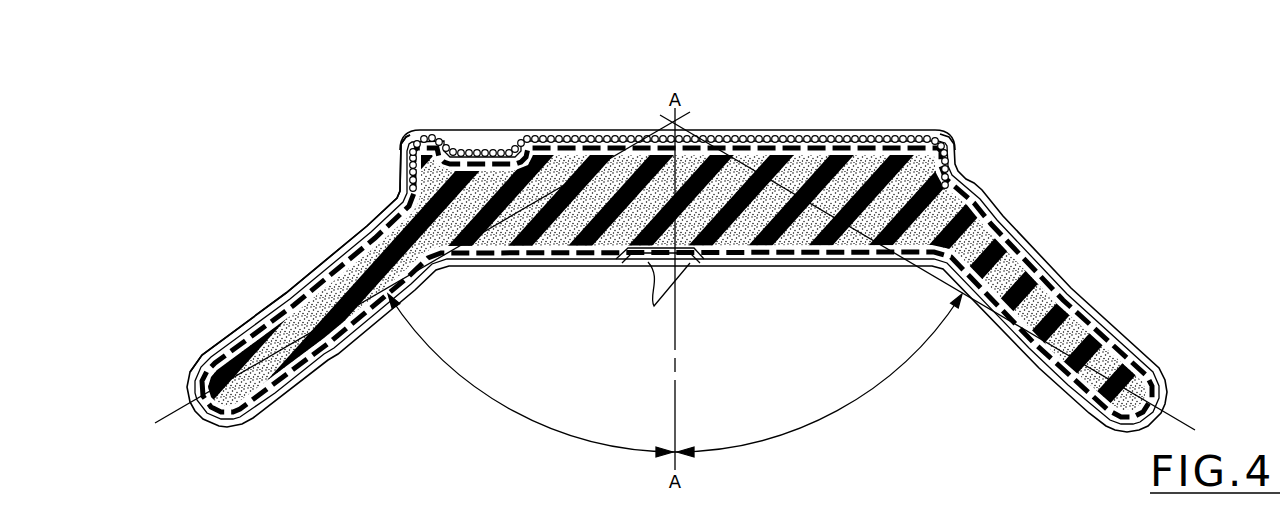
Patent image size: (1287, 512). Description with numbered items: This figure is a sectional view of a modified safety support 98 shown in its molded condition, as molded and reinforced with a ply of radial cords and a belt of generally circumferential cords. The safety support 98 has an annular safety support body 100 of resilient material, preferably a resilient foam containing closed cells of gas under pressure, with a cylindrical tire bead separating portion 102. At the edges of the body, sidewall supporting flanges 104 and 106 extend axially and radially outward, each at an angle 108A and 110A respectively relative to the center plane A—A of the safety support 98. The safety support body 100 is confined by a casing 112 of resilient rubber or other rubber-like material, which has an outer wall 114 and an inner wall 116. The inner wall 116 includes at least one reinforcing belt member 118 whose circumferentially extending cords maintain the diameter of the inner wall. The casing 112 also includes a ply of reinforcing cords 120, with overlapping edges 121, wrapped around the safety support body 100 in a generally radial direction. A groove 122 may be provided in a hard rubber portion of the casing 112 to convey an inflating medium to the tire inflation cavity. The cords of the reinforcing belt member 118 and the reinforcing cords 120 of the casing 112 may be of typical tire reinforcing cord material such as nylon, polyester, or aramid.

The safety support 98 is at (1015, 206).
The annular safety support body 100 is at (922, 165).
The cylindrical tire bead separating portion 102 is at (640, 263).
The sidewall supporting flange 104 is at (265, 347).
The sidewall supporting flange 106 is at (1075, 357).
The angle 108A is at (503, 407).
The angle 110A is at (878, 399).
The casing 112 is at (352, 262).
The outer wall 114 is at (718, 264).
The inner wall 116 is at (775, 131).
The reinforcing belt member 118 is at (881, 133).
The ply of reinforcing cords 120 is at (777, 258).
The overlapping edges 121 is at (655, 299).
The groove 122 is at (452, 137).